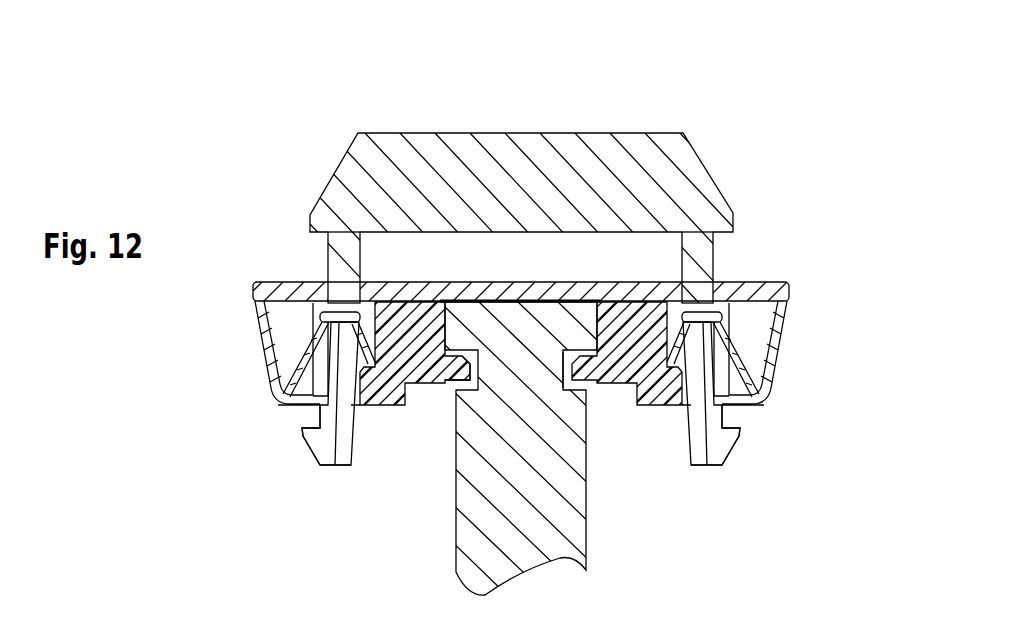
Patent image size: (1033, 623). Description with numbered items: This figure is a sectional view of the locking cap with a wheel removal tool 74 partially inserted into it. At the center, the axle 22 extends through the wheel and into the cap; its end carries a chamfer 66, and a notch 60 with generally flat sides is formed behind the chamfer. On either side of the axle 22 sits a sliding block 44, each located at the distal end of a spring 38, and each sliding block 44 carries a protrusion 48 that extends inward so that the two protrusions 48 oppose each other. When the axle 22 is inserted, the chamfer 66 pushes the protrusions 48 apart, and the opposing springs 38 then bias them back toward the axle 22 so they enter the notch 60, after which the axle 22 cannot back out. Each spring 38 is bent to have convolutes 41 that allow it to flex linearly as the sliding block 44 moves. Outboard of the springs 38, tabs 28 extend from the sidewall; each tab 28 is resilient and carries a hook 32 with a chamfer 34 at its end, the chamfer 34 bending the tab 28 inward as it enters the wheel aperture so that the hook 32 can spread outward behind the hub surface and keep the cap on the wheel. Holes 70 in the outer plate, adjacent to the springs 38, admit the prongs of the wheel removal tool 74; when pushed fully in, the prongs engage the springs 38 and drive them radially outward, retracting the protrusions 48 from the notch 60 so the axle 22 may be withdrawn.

The axle 22 is at (468, 538).
The tab 28 is at (362, 462).
The hook 32 is at (302, 432).
The chamfer 34 is at (310, 453).
The spring 38 is at (262, 352).
The convolute 41 is at (292, 402).
The sliding block 44 is at (391, 405).
The protrusion 48 is at (481, 312).
The notch 60 is at (470, 382).
The chamfer 66 is at (583, 318).
The hole 70 is at (362, 300).
The wheel removal tool 74 is at (630, 118).